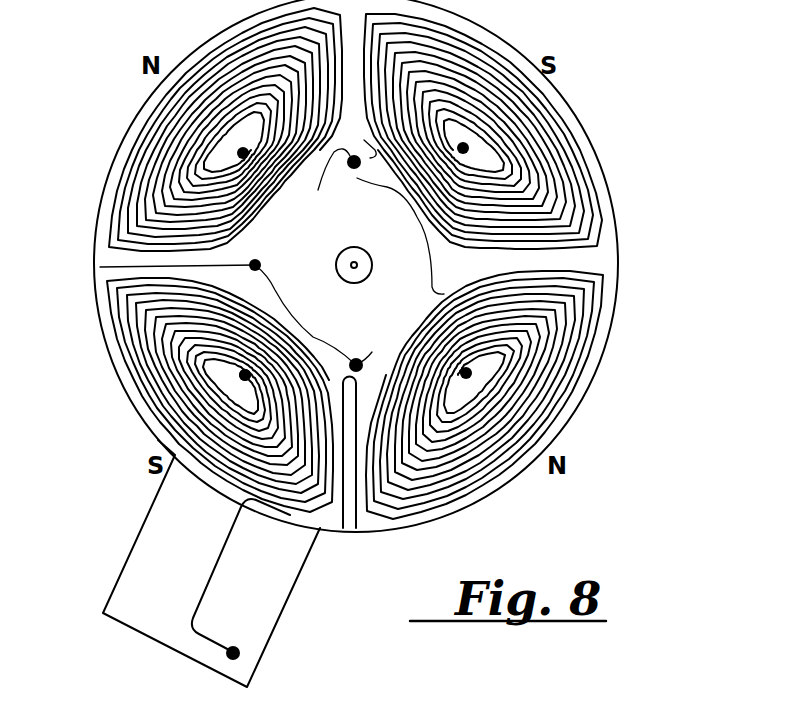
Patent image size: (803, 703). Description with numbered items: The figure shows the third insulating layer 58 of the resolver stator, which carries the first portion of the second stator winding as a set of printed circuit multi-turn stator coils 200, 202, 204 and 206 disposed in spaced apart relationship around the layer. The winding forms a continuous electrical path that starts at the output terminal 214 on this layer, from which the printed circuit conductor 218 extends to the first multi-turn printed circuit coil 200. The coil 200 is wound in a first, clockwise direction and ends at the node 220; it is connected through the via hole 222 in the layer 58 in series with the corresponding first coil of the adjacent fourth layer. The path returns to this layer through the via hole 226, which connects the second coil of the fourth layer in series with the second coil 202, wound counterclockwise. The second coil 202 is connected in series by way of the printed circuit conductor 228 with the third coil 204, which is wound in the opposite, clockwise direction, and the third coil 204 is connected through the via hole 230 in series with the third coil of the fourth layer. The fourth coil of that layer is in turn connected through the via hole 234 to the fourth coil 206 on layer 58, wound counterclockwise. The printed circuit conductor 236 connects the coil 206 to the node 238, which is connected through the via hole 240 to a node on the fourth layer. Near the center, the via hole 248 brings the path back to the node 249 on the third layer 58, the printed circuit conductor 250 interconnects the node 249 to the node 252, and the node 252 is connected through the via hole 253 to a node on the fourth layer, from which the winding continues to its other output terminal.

The third insulating layer 58 is at (612, 252).
The first multi-turn printed circuit coil 200 is at (132, 388).
The second coil 202 is at (133, 132).
The third coil 204 is at (568, 132).
The fourth coil 206 is at (580, 385).
The output terminal 214 is at (233, 653).
The printed circuit conductor 218 is at (208, 567).
The node 220 is at (245, 375).
The via hole 222 is at (245, 375).
The via hole 226 is at (243, 153).
The printed circuit conductor 228 is at (364, 140).
The via hole 230 is at (463, 148).
The via hole 234 is at (466, 373).
The printed circuit conductor 236 is at (446, 290).
The node 238 is at (353, 170).
The via hole 240 is at (318, 190).
The via hole 248 is at (262, 264).
The node 249 is at (100, 267).
The printed circuit conductor 250 is at (297, 322).
The node 252 is at (372, 352).
The via hole 253 is at (356, 365).